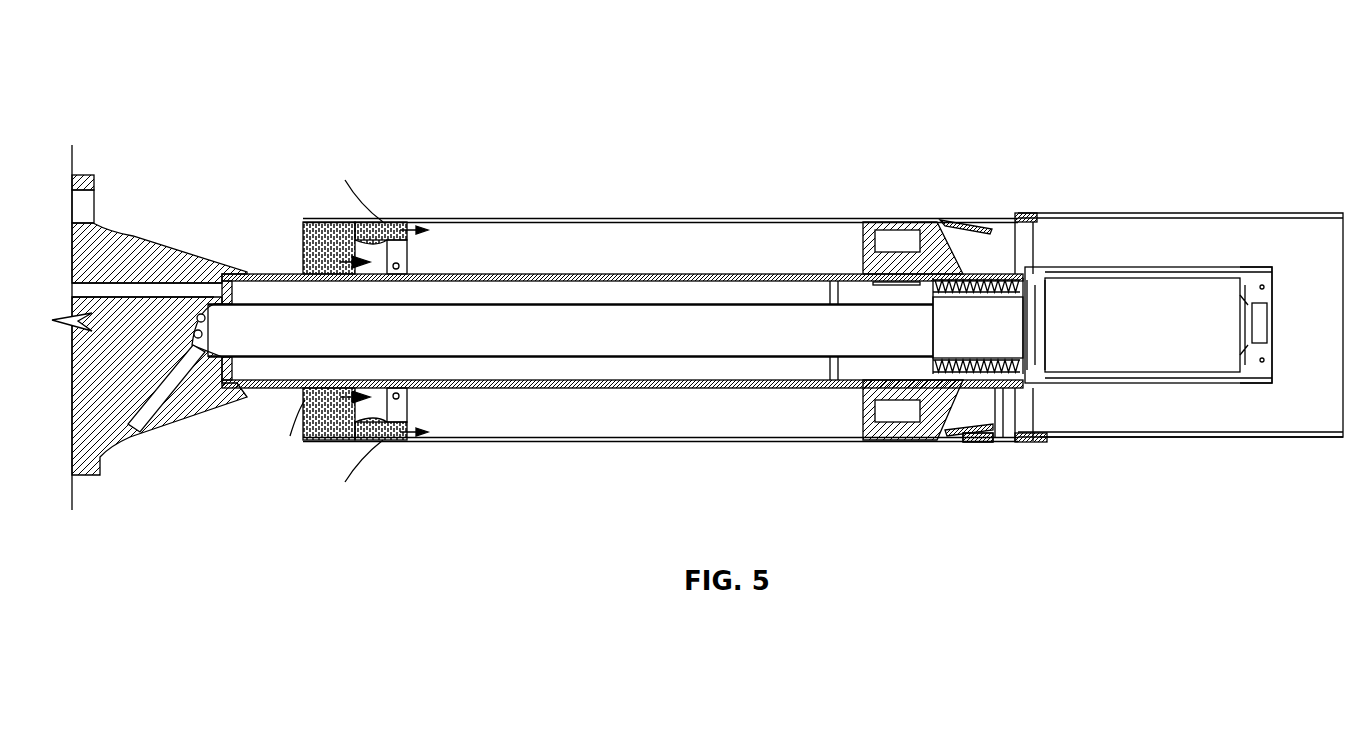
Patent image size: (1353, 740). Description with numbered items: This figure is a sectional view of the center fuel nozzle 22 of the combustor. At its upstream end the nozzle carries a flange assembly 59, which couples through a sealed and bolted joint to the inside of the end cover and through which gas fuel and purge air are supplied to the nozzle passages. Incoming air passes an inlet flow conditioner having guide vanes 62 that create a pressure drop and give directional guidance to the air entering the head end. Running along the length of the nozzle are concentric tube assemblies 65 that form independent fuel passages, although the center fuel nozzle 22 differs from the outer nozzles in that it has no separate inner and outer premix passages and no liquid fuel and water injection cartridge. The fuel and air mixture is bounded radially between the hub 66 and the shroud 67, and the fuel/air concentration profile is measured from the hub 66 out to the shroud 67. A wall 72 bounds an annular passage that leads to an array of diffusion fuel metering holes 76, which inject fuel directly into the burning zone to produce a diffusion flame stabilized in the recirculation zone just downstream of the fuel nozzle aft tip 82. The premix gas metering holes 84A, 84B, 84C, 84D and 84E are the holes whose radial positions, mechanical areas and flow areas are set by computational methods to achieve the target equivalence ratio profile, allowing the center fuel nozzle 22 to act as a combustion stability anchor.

The center fuel nozzle 22 is at (145, 62).
The flange assembly 59 is at (105, 452).
The guide vanes 62 is at (320, 445).
The concentric tube assemblies 65 is at (485, 275).
The hub 66 is at (1098, 265).
The shroud 67 is at (1160, 440).
The wall 72 is at (1158, 370).
The diffusion fuel metering holes 76 is at (1245, 325).
The fuel nozzle aft tip 82 is at (1264, 265).
The premix gas metering hole A 84A is at (993, 442).
The premix gas metering hole B 84B is at (917, 440).
The premix gas metering hole C 84C is at (893, 440).
The premix gas metering hole D 84D is at (917, 252).
The premix gas metering hole E 84E is at (893, 217).